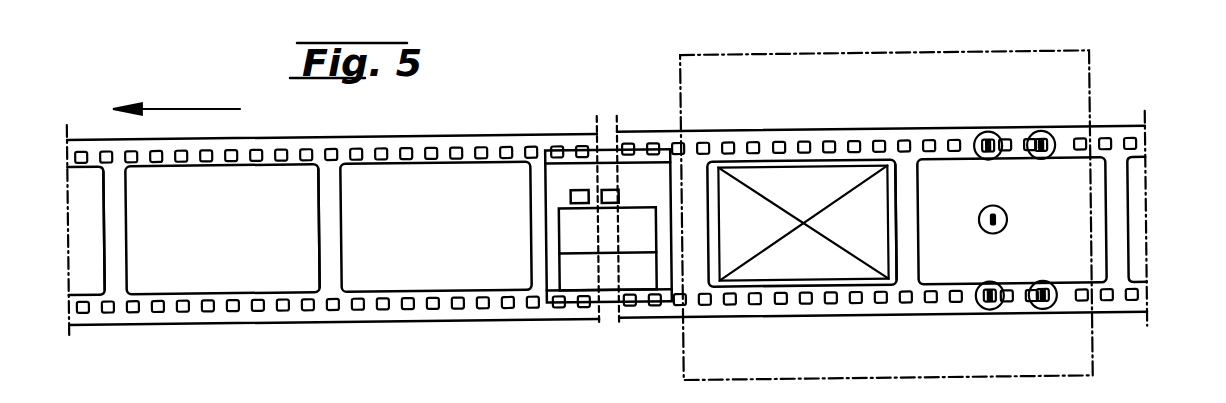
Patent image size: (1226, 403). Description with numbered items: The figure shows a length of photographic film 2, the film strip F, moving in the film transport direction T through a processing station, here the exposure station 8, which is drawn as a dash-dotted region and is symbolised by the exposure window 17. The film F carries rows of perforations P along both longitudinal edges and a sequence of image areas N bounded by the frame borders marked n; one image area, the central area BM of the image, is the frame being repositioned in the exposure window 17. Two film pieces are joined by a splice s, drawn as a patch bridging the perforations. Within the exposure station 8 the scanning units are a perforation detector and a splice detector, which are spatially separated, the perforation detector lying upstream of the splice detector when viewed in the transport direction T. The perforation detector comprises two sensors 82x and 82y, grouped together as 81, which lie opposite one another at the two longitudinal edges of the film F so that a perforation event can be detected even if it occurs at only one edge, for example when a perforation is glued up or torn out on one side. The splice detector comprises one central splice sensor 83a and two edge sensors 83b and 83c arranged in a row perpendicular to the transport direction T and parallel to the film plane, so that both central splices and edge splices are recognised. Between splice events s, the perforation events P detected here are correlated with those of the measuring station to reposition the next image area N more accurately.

The photographic film 2 is at (138, 339).
The film F is at (467, 128).
The perforation events P is at (333, 149).
The next image area N is at (223, 275).
The frame boundary line n is at (105, 215).
The film transport direction T is at (203, 109).
The splice events s is at (540, 216).
The exposure station 8 is at (1107, 46).
The exposure window 17 is at (818, 283).
The central area of the image BM is at (800, 226).
The pair of splice mark holes 81 is at (1065, 103).
The perforation sensor x 82x is at (1051, 133).
The perforation sensor y 82y is at (1050, 309).
The central splice sensor 83a is at (984, 232).
The edge splice sensor 83b is at (978, 134).
The edge splice sensor 83c is at (988, 309).